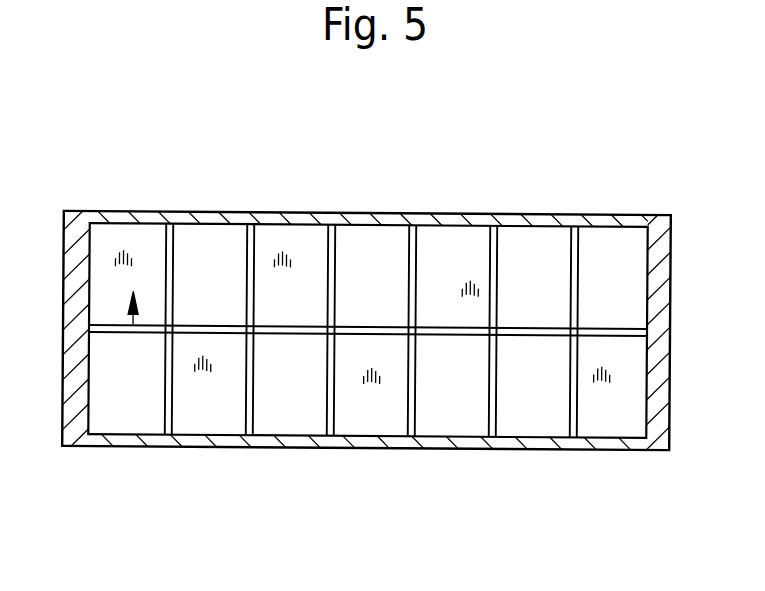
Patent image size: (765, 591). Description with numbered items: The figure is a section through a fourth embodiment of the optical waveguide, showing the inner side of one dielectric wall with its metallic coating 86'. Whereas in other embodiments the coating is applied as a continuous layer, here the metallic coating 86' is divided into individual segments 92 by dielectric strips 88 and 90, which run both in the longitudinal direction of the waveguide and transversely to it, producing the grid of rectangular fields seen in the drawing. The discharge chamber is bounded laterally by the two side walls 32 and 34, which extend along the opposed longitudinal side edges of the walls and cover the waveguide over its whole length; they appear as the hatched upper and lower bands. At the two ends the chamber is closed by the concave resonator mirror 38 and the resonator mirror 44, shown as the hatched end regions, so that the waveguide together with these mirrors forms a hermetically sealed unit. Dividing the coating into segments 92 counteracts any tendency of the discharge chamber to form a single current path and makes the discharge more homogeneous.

The side wall 32 is at (520, 222).
The side wall 34 is at (493, 441).
The concave resonator mirror 38 is at (655, 230).
The resonator mirror 44 is at (75, 435).
The metallic coating 86' is at (367, 441).
The dielectric strip 88 is at (166, 377).
The dielectric strip 90 is at (111, 327).
The segment 92 is at (108, 260).